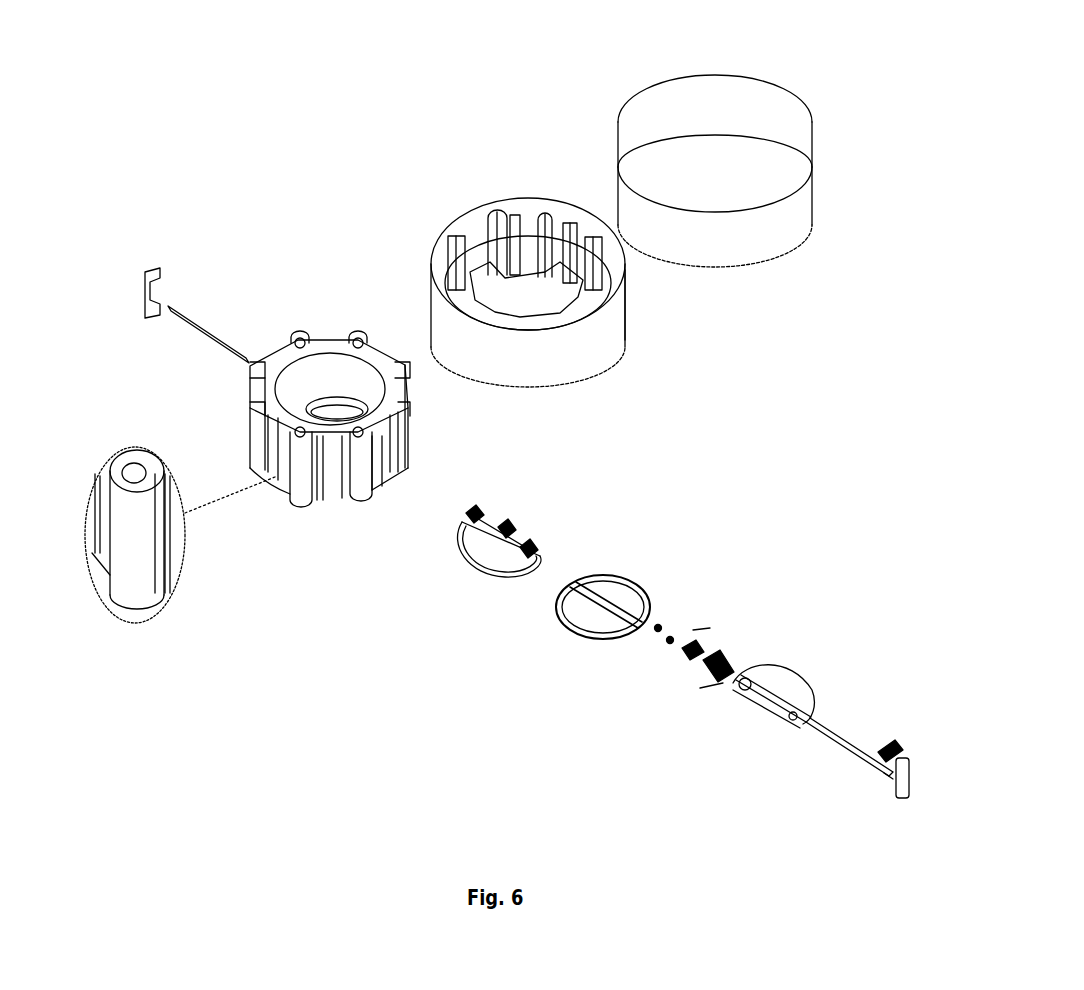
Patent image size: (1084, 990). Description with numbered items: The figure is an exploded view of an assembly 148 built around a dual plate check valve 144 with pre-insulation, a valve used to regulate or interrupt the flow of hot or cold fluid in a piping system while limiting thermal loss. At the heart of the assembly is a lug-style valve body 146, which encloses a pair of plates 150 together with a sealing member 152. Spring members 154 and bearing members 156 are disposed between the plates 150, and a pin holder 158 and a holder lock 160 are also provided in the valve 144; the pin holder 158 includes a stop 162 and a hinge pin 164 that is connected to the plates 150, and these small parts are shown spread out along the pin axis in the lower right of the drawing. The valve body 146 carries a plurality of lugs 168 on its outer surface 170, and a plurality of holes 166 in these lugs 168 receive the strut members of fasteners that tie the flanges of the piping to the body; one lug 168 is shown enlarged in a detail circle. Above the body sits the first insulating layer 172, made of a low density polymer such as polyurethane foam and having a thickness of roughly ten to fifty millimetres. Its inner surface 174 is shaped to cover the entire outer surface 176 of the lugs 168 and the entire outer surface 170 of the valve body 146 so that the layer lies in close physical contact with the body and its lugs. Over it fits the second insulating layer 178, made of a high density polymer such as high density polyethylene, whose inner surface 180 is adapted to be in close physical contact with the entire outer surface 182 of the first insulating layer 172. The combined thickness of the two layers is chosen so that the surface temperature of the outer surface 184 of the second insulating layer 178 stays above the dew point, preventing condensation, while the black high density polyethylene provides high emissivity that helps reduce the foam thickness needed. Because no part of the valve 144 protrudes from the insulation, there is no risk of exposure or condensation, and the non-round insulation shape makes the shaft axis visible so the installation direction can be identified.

The dual plate check valve 144 is at (318, 225).
The valve body 146 is at (404, 428).
The assembly 148 is at (310, 122).
The pair of plates 150 is at (477, 552).
The sealing member 152 is at (617, 592).
The spring members 154 is at (682, 643).
The bearing members 156 is at (498, 525).
The pin holder 158 is at (910, 758).
The holder lock 160 is at (887, 750).
The stop 162 is at (887, 778).
The hinge pin 164 is at (825, 740).
The plurality of holes 166 is at (358, 336).
The plurality of lugs 168 is at (347, 472).
The outer surface of the valve body 170 is at (368, 462).
The first insulating layer 172 is at (507, 200).
The inner surface of the first insulating layer 174 is at (565, 255).
The outer surface of the lugs 176 is at (402, 428).
The second insulating layer 178 is at (746, 62).
The inner surface of the second insulating layer 180 is at (770, 115).
The outer surface of the first insulating layer 182 is at (562, 363).
The outer surface of the second insulating layer 184 is at (745, 235).